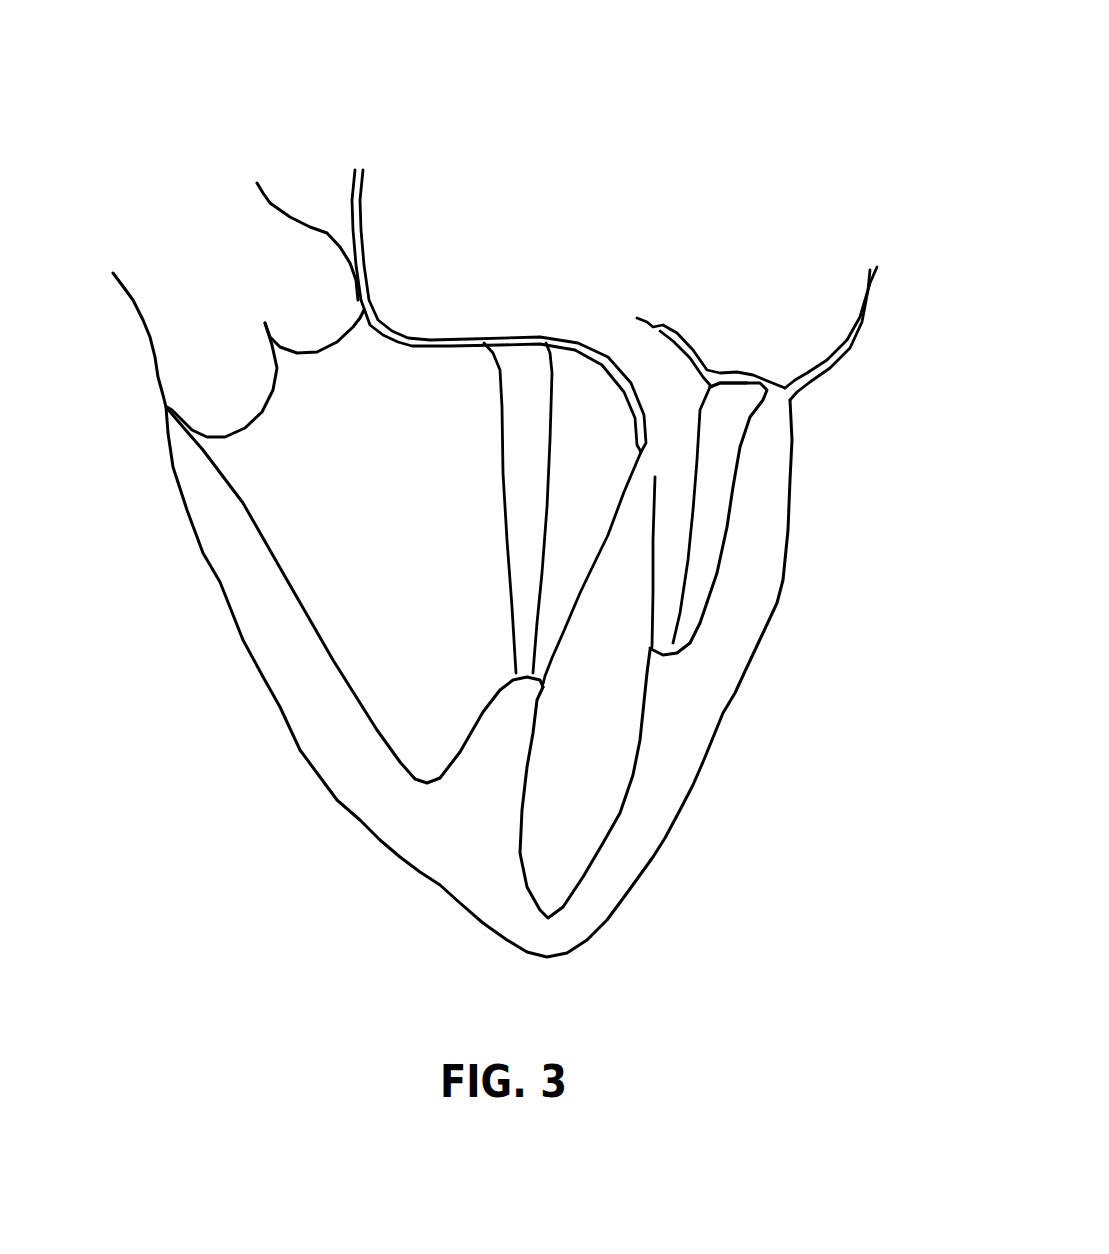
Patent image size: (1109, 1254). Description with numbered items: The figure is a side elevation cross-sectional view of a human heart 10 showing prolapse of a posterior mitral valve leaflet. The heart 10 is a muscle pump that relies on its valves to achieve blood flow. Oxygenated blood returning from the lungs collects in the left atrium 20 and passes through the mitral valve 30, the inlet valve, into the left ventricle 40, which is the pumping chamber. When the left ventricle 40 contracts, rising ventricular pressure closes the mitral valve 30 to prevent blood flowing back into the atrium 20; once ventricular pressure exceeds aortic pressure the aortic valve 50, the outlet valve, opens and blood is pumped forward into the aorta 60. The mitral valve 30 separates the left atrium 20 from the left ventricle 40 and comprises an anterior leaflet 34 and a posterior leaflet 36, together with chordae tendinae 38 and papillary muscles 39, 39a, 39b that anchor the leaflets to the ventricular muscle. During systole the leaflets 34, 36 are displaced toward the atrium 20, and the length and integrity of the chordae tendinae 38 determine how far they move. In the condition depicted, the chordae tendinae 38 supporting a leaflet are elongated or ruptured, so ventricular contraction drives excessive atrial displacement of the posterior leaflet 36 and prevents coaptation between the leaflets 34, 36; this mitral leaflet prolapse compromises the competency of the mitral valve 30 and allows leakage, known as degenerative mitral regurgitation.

The human heart 10 is at (291, 854).
The left atrium 20 is at (462, 247).
The mitral valve 30 is at (692, 395).
The anterior leaflet 34 is at (620, 353).
The posterior leaflet 36 is at (697, 340).
The chordae tendinae 38 is at (647, 320).
The papillary muscles 39 is at (708, 519).
The papillary muscle 39a is at (500, 743).
The papillary muscle 39b is at (675, 688).
The left ventricle 40 is at (588, 718).
The aortic valve 50 is at (266, 309).
The aorta 60 is at (208, 256).